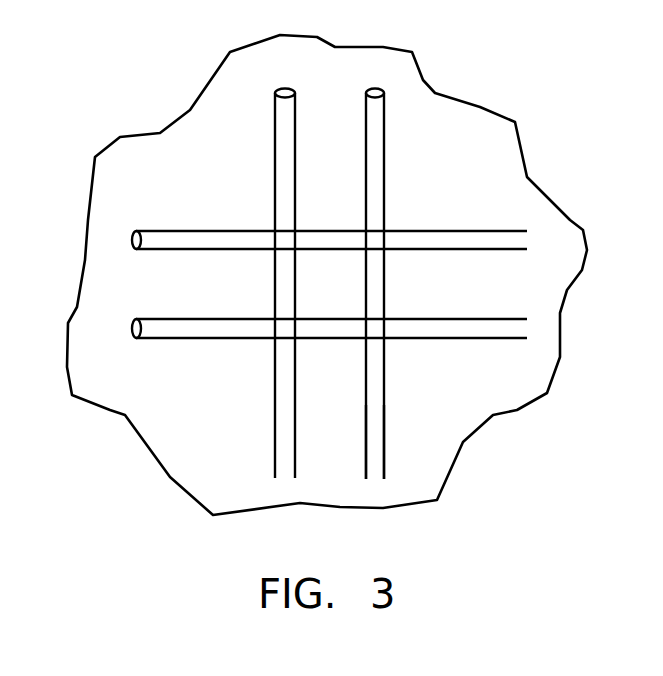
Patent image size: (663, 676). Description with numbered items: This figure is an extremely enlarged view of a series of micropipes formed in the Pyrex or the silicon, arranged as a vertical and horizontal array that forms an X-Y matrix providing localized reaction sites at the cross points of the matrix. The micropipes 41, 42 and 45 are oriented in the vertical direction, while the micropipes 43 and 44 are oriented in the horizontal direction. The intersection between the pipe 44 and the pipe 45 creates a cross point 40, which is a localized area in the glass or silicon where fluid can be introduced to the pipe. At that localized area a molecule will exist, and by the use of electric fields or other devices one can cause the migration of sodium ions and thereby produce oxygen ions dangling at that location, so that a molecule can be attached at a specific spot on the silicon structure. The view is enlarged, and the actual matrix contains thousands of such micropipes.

The cross point 40 is at (385, 230).
The micropipe 41 is at (377, 280).
The micropipe 42 is at (280, 392).
The micropipe 43 is at (472, 335).
The micropipe 44 is at (180, 238).
The micropipe 45 is at (380, 405).